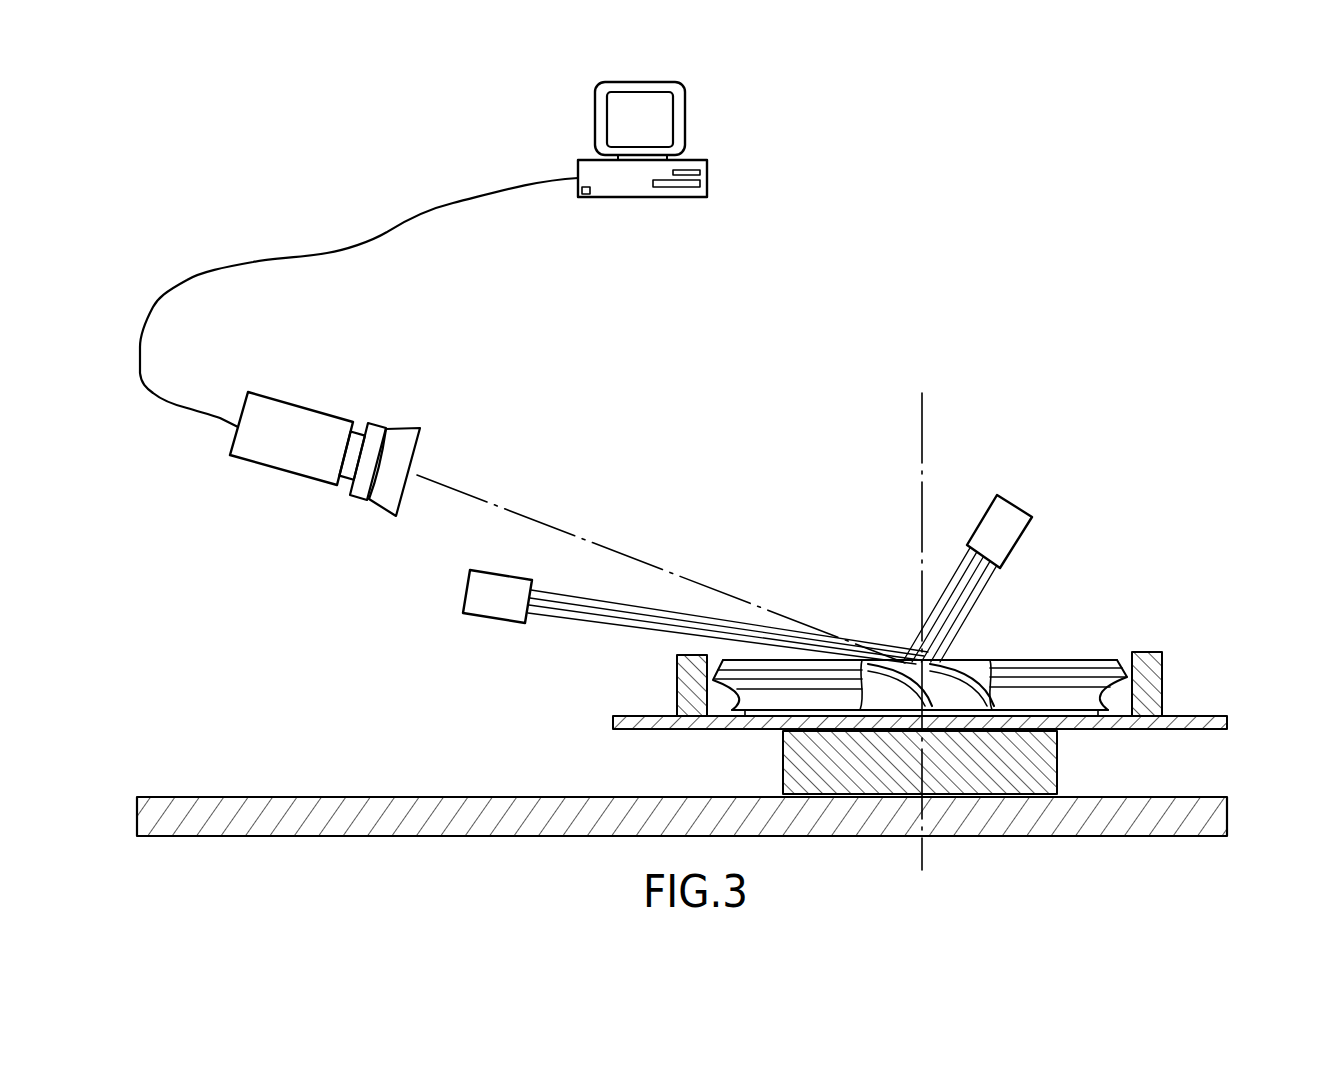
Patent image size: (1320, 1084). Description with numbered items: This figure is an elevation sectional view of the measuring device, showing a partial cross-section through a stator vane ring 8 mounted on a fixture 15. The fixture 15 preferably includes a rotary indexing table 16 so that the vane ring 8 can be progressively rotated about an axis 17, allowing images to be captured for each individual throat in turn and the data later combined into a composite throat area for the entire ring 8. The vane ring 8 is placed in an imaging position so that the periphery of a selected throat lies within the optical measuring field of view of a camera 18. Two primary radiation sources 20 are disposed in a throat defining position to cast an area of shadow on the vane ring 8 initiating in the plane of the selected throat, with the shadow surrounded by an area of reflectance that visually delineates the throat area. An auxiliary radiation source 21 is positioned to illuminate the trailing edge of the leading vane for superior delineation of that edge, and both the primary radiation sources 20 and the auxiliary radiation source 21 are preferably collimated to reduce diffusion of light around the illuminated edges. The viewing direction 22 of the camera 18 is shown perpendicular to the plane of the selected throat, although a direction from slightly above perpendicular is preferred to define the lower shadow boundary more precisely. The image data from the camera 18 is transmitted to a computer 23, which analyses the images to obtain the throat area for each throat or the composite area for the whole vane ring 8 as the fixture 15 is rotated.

The vane ring 8 is at (1078, 658).
The fixture 15 is at (1176, 701).
The rotary indexing table 16 is at (1045, 748).
The axis 17 is at (922, 437).
The camera 18 is at (303, 407).
The primary radiation source 20 is at (1018, 547).
The auxiliary radiation source 21 is at (507, 620).
The viewing direction 22 is at (593, 542).
The computer 23 is at (685, 110).